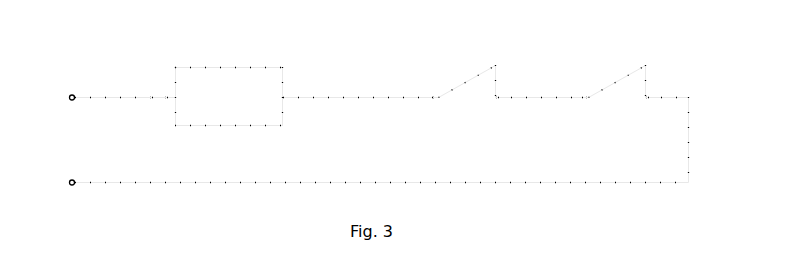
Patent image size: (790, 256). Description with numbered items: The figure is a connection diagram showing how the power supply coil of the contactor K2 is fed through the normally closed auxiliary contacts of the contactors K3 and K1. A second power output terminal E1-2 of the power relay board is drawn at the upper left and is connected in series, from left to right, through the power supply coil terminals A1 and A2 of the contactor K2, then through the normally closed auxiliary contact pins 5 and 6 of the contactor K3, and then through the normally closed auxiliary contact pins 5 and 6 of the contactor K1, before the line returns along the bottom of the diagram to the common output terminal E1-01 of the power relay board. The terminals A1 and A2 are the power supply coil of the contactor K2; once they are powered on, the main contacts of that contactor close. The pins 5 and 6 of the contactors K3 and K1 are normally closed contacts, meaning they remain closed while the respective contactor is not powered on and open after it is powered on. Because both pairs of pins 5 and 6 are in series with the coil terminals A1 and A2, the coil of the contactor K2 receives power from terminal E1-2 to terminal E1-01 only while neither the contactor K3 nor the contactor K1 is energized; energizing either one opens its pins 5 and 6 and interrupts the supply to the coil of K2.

The second power output terminal E1-2 is at (111, 90).
The power supply coil terminal A1 is at (162, 87).
The contactor K2 is at (229, 96).
The power supply coil terminal A2 is at (360, 87).
The contactor K3 is at (514, 68).
The contactor K1 is at (639, 110).
The normally closed auxiliary contact pin 5 is at (503, 84).
The normally closed auxiliary contact pin 6 is at (579, 84).
The common output terminal E1-01 is at (367, 190).